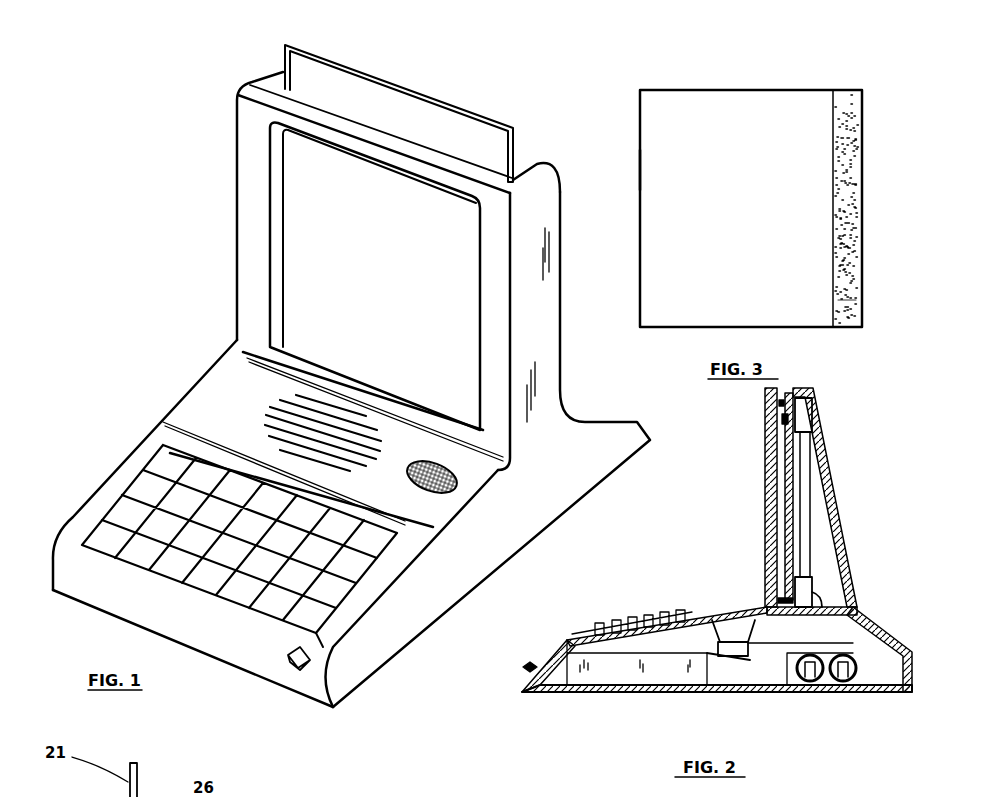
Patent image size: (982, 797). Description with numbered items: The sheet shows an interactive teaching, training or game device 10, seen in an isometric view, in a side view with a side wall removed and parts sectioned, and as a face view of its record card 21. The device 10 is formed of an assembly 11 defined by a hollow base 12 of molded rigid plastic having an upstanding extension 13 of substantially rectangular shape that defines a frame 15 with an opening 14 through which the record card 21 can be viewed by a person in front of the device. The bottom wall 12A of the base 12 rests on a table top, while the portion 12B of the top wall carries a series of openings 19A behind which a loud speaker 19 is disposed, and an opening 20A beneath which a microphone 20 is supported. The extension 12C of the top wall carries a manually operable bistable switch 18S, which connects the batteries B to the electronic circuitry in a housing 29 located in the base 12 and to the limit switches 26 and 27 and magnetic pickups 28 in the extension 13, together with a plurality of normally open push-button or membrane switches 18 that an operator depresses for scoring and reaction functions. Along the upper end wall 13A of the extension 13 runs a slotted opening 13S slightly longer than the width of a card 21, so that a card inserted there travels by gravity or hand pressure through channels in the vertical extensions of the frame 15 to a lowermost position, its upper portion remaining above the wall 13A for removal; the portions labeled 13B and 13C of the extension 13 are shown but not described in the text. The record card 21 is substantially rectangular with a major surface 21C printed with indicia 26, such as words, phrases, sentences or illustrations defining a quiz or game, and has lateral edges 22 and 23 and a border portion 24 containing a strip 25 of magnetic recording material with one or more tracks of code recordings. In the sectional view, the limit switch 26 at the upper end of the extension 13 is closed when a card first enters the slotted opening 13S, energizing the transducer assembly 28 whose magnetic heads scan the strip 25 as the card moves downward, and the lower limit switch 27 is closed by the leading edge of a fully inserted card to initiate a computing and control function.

In FIG. 1, the interactive teaching, training or game device 10 is at (165, 70).
In FIG. 1, the assembly 11 is at (237, 118).
In FIG. 1, the hollow base 12 is at (348, 696).
In FIG. 2, the hollow base 12 is at (700, 692).
In FIG. 1, the bottom wall of the base 12A is at (433, 626).
In FIG. 1, the portion of the top wall of the base 12B is at (248, 368).
In FIG. 1, the extension of the top wall of the base 12C is at (60, 528).
In FIG. 1, the upstanding extension 13 is at (547, 327).
In FIG. 2, the upstanding extension 13 is at (820, 460).
In FIG. 1, the upper end wall of the upward extension 13A is at (275, 108).
In FIG. 1, the stand side portion 13B is at (553, 280).
In FIG. 1, the bezel edge 13C is at (237, 283).
In FIG. 1, the slotted opening 13S is at (517, 178).
In FIG. 2, the slotted opening 13S is at (780, 390).
In FIG. 1, the opening 14 is at (297, 183).
In FIG. 1, the frame 15 is at (253, 243).
In FIG. 1, the push-button or membrane switches 18 is at (100, 485).
In FIG. 2, the push-button or membrane switches 18 is at (660, 625).
In FIG. 1, the manually operable bistable switch 18S is at (292, 667).
In FIG. 2, the manually operable bistable switch 18S is at (530, 667).
In FIG. 2, the loud speaker 19 is at (730, 630).
In FIG. 1, the openings 19A is at (203, 381).
In FIG. 1, the microphone 20 is at (455, 484).
In FIG. 1, the opening 20A is at (457, 488).
In FIG. 1, the record card 21 is at (338, 70).
In FIG. 3, the record card 21 is at (622, 110).
In FIG. 3, the major surface of the record card 21C is at (700, 103).
In FIG. 3, the lateral edge 22 is at (640, 173).
In FIG. 3, the lateral edge 23 is at (858, 258).
In FIG. 3, the border portion 24 is at (848, 282).
In FIG. 3, the strip of magnetic recording material 25 is at (848, 309).
In FIG. 3, the indicia; upper limit switch 26 is at (752, 113).
In FIG. 2, the indicia; upper limit switch 26 is at (812, 405).
In FIG. 2, the limit switch 27 is at (815, 600).
In FIG. 2, the magnetic pickups (transducer assembly) 28 is at (812, 420).
In FIG. 2, the housing 29 is at (640, 672).
In FIG. 2, the batteries B is at (845, 678).